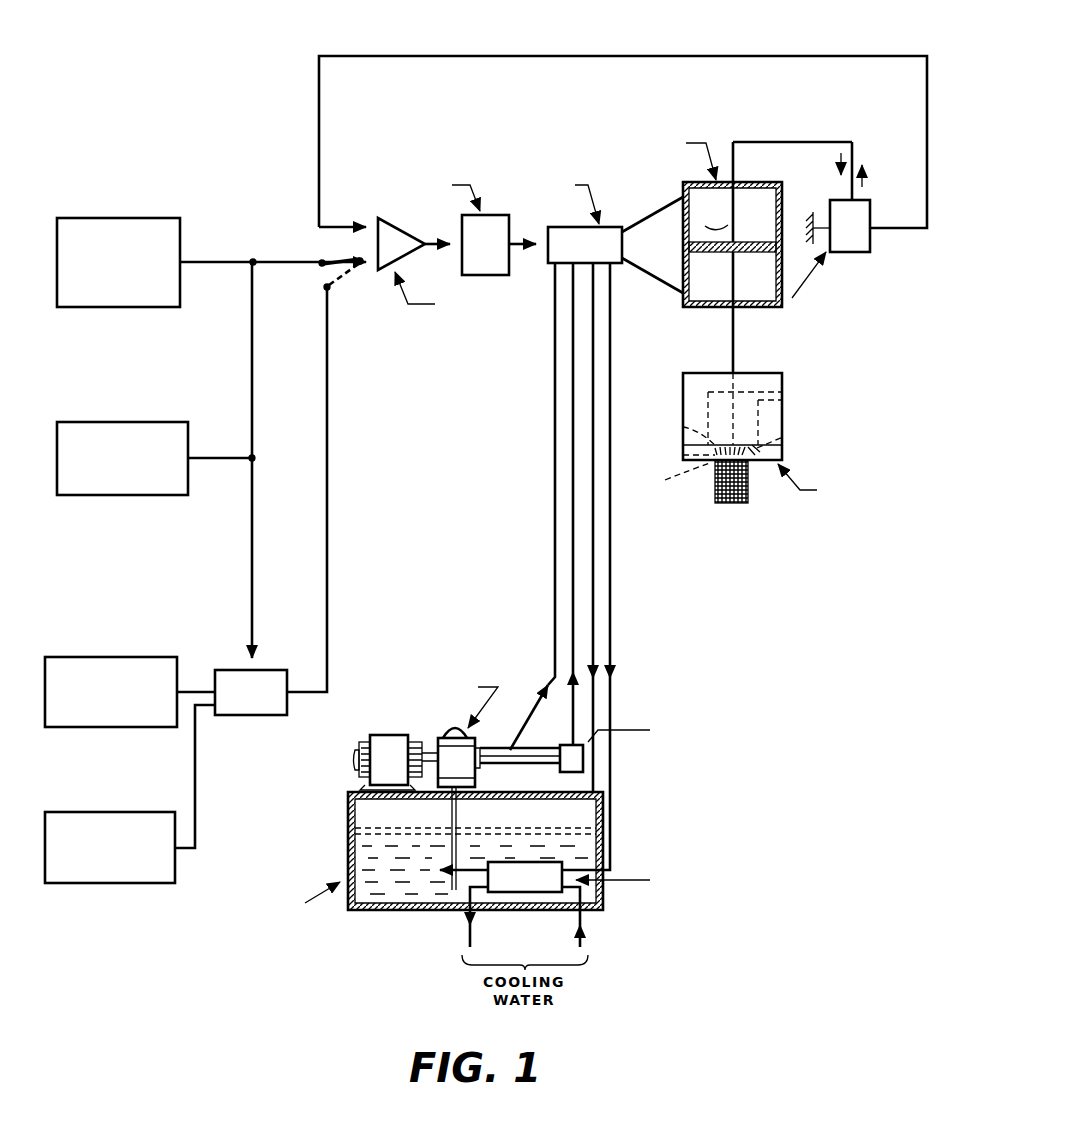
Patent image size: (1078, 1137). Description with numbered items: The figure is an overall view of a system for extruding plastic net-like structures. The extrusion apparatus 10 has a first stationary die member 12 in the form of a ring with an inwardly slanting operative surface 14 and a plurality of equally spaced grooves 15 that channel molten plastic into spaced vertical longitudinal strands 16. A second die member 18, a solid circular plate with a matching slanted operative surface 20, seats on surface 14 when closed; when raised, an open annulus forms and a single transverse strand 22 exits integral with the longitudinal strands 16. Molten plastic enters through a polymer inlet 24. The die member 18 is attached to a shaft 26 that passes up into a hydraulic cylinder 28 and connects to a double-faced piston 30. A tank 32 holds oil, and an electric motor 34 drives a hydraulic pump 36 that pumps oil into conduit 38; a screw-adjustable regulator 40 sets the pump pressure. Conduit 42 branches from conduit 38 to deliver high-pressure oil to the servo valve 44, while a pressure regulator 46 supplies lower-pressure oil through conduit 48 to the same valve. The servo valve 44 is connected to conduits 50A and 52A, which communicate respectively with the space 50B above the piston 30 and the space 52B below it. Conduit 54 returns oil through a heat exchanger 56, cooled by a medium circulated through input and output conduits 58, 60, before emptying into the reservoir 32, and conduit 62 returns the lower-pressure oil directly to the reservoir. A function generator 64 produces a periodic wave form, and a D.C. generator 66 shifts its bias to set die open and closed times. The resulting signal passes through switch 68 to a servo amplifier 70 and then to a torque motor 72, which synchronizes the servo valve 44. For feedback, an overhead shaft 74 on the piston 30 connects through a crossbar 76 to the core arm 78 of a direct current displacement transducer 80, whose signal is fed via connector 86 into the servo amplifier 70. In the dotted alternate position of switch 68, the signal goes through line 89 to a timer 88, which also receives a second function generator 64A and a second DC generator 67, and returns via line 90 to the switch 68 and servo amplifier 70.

The extrusion apparatus 10 is at (776, 444).
The first stationary die member 12 is at (758, 463).
The operative surface 14 is at (787, 437).
The grooves 15 is at (669, 481).
The longitudinal strands 16 is at (714, 488).
The second die member 18 is at (683, 420).
The operative surface 20 is at (683, 455).
The transverse strand 22 is at (743, 505).
The polymer inlet 24 is at (783, 406).
The shaft 26 is at (732, 350).
The hydraulic cylinder 28 is at (708, 235).
The double-faced piston 30 is at (747, 243).
The tank 32 is at (376, 917).
The electric motor 34 is at (355, 767).
The hydraulic pump 36 is at (480, 778).
The conduit 38 is at (496, 749).
The screw-adjustable regulator 40 is at (452, 733).
The conduit 42 is at (554, 424).
The servo valve 44 is at (546, 262).
The pressure regulator 46 is at (561, 747).
The conduit 48 is at (572, 465).
The conduit 50A is at (653, 218).
The space 50B is at (753, 197).
The conduit 52A is at (650, 278).
The space 52B is at (753, 292).
The conduit 54 is at (611, 600).
The heat exchanger 56 is at (535, 860).
The input conduit 58 is at (582, 932).
The output conduit 60 is at (468, 932).
The conduit 62 is at (594, 543).
The function generator 64 is at (146, 218).
The second function generator 64A is at (134, 657).
The D.C. generator 66 is at (153, 422).
The second DC generator 67 is at (110, 812).
The switch 68 is at (352, 256).
The servo amplifier 70 is at (383, 272).
The torque motor 72 is at (461, 225).
The overhead shaft 74 is at (708, 213).
The crossbar 76 is at (812, 142).
The core arm 78 is at (856, 149).
The direct current displacement transducer 80 is at (880, 243).
The connector 86 is at (583, 56).
The timer 88 is at (242, 716).
The line 89 is at (254, 388).
The line 90 is at (328, 440).